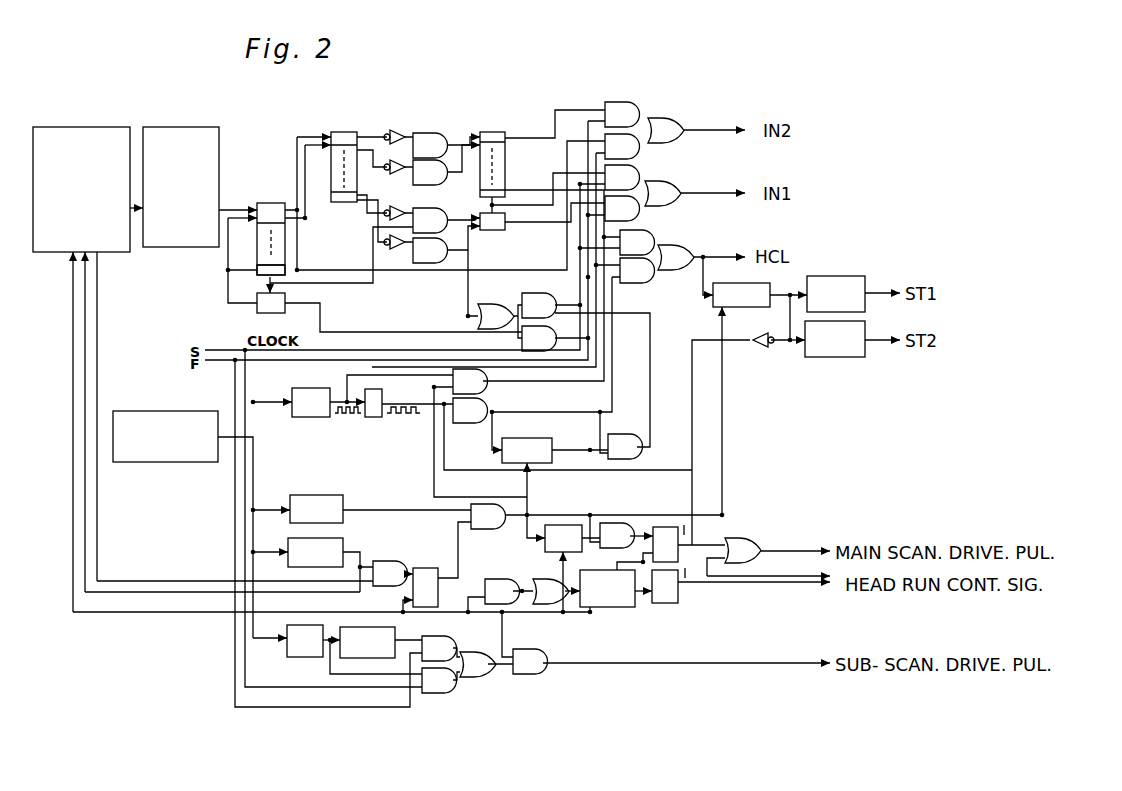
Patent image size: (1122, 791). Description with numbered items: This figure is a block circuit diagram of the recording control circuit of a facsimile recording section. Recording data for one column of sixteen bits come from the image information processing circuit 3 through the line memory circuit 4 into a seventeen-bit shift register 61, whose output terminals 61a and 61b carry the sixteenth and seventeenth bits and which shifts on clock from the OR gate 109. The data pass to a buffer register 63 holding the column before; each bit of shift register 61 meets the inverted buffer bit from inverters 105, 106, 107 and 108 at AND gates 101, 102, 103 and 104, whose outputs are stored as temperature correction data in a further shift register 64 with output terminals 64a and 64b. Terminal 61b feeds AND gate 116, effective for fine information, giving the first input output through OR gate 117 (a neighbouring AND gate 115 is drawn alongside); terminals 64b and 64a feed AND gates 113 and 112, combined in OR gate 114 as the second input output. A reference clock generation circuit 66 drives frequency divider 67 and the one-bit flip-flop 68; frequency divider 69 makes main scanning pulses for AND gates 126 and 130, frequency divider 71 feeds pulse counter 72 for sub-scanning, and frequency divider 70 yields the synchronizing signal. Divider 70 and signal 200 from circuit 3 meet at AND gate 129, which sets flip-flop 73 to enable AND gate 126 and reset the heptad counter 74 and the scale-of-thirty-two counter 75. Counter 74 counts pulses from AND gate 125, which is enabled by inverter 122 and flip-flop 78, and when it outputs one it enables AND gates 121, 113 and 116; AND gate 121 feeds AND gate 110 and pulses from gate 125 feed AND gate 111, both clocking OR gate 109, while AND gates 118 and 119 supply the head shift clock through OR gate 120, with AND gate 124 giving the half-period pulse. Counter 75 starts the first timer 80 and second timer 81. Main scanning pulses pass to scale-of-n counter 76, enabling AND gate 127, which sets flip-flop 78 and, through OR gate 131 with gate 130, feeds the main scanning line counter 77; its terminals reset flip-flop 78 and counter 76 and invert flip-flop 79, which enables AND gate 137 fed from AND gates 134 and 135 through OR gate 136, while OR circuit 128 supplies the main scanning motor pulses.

The image information processing unit 3 is at (100, 127).
The line memory circuit 4 is at (190, 127).
The shift register 61 is at (271, 203).
The output terminal for the 16th bit 61a is at (256, 280).
The output terminal for the 17th bit 61b is at (257, 303).
The buffer register 63 is at (344, 132).
The shift register 64 is at (492, 132).
The output terminal 64a is at (500, 205).
The output terminal 64b is at (525, 248).
The reference clock generation circuit 66 is at (180, 462).
The frequency divider 67 is at (308, 417).
The flip-flop 68 is at (374, 417).
The frequency divider 69 is at (330, 495).
The frequency divider 70 is at (340, 548).
The frequency divider 71 is at (305, 657).
The counter 72 is at (350, 658).
The flip-flop 73 is at (432, 568).
The heptad counter 74 is at (530, 438).
The scale-of-32 counter 75 is at (725, 283).
The scale-of-n counter 76 is at (560, 525).
The main scanning line counter 77 is at (606, 607).
The flip-flop 78 is at (668, 527).
The flip-flop 79 is at (665, 603).
The first timer 80 is at (846, 276).
The second timer 81 is at (840, 357).
The AND gate 101 is at (430, 145).
The AND gate 102 is at (430, 172).
The AND gate 103 is at (430, 220).
The AND gate 104 is at (430, 250).
The inverter 105 is at (398, 130).
The inverter 106 is at (396, 160).
The inverter 107 is at (400, 207).
The inverter 108 is at (397, 249).
The OR gate 109 is at (489, 327).
The AND gate 110 is at (539, 305).
The AND gate 111 is at (539, 338).
The AND gate 112 is at (620, 102).
The AND gate 113 is at (612, 135).
The OR gate 114 is at (668, 118).
The AND gate 115 is at (638, 170).
The AND gate 116 is at (640, 212).
The OR gate 117 is at (682, 190).
The AND gate 118 is at (657, 240).
The AND gate 119 is at (638, 276).
The OR gate 120 is at (688, 267).
The AND gate 121 is at (622, 434).
The inverter 122 is at (758, 349).
The AND gate 124 is at (480, 375).
The AND gate 125 is at (480, 405).
The AND gate 126 is at (490, 497).
The AND gate 127 is at (618, 523).
The OR circuit 128 is at (750, 540).
The AND gate 129 is at (386, 562).
The AND gate 130 is at (492, 579).
The OR gate 131 is at (548, 604).
The AND gate 134 is at (445, 636).
The AND gate 135 is at (440, 693).
The OR gate 136 is at (478, 677).
The AND gate 137 is at (535, 674).
The signal 200 is at (97, 540).